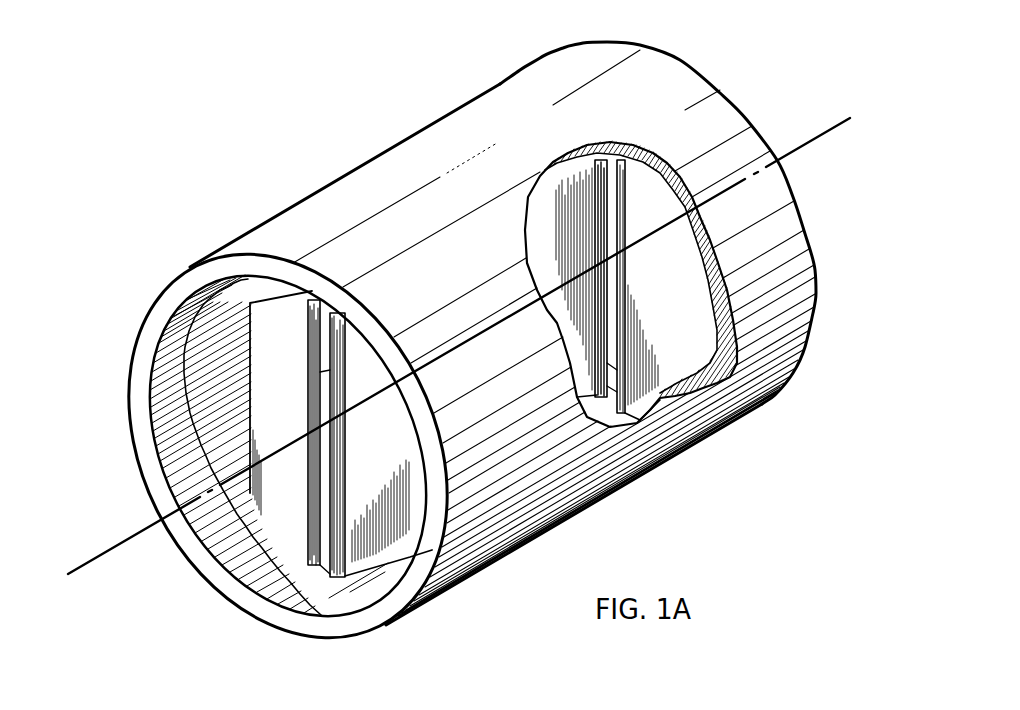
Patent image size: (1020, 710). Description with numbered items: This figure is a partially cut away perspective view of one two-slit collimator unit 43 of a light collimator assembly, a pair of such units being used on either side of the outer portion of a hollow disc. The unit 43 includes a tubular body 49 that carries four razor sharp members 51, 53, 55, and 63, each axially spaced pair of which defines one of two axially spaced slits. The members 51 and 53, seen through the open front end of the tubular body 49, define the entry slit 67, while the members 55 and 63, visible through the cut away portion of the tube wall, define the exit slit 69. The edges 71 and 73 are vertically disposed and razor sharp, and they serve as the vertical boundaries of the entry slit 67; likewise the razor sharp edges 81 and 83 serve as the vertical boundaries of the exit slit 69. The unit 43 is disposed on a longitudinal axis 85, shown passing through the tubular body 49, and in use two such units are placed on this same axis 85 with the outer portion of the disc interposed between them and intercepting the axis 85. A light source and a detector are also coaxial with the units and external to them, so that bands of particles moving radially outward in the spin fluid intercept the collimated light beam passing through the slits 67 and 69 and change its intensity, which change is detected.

The two-slit collimator unit 43 is at (397, 96).
The tubular body 49 is at (627, 457).
The razor sharp member 51 is at (282, 372).
The razor sharp member 53 is at (390, 484).
The razor sharp member 55 is at (567, 269).
The razor sharp member 63 is at (671, 289).
The entry slit 67 is at (323, 372).
The exit slit 69 is at (611, 143).
The edge 71 is at (333, 448).
The edge 73 is at (309, 397).
The edge 81 is at (620, 218).
The edge 83 is at (600, 197).
The longitudinal axis 85 is at (117, 548).